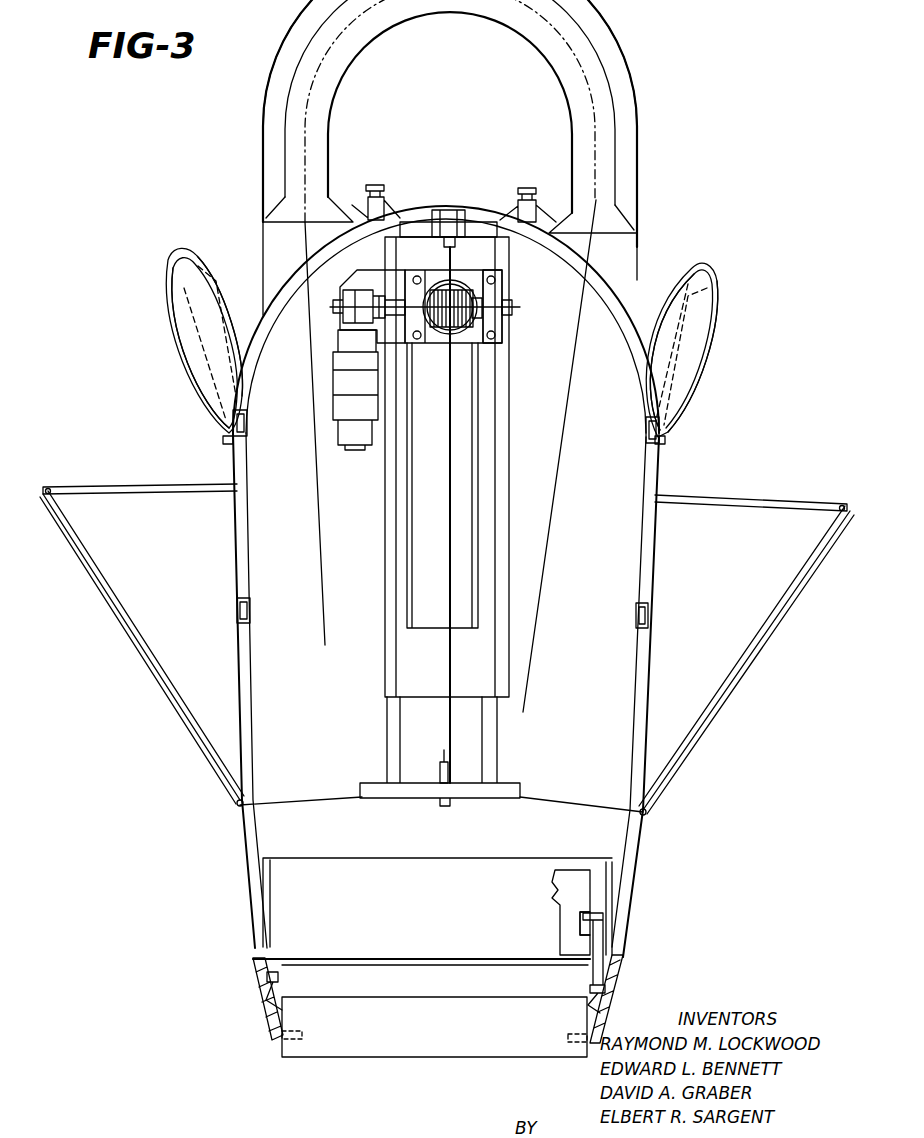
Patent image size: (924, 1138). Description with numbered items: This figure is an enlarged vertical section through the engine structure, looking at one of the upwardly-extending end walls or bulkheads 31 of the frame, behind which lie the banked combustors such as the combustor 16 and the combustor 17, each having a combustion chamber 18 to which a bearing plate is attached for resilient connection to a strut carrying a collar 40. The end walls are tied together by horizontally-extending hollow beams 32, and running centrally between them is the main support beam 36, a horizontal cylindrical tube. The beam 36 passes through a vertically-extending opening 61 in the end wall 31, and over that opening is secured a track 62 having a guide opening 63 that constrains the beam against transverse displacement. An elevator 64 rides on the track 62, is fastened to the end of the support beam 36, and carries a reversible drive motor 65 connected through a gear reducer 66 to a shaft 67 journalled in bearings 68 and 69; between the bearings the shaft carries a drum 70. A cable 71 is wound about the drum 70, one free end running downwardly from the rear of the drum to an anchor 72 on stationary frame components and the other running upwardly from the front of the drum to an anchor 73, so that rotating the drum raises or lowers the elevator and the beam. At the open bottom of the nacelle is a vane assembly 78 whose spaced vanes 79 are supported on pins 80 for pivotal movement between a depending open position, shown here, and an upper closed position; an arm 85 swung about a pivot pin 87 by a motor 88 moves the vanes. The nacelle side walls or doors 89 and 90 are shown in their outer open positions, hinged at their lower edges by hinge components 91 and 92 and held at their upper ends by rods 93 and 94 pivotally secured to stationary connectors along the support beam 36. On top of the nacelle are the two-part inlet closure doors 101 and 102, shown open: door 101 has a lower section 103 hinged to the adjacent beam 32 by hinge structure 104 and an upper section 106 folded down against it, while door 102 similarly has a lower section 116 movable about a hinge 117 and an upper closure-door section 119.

The combustor 16 is at (640, 130).
The combustor 17 is at (262, 107).
The combustion chamber 18 is at (262, 237).
The end wall 31 is at (587, 692).
The beam 32 is at (248, 428).
The main support beam 36 is at (454, 340).
The collar 40 is at (374, 190).
The opening 61 is at (482, 752).
The track 62 is at (386, 676).
The guide opening 63 is at (410, 594).
The elevator 64 is at (492, 346).
The drive motor 65 is at (355, 442).
The gear reducer 66 is at (340, 308).
The shaft 67 is at (504, 308).
The bearing 68 is at (500, 326).
The bearing 69 is at (398, 288).
The drum 70 is at (440, 332).
The cable 71 is at (450, 515).
The anchor 72 is at (440, 770).
The anchor 73 is at (452, 212).
The vane assembly 78 is at (616, 1004).
The vanes 79 is at (350, 1060).
The pins 80 is at (278, 1048).
The arm 85 is at (604, 952).
The pivot pin 87 is at (586, 930).
The motor 88 is at (554, 884).
The door 89 is at (172, 718).
The door 90 is at (722, 696).
The hinge component 91 is at (238, 806).
The hinge component 92 is at (644, 813).
The rod 93 is at (145, 494).
The rod 94 is at (737, 506).
The closure door 101 is at (158, 312).
The closure door 102 is at (730, 304).
The lower section 103 is at (712, 362).
The hinge structure 104 is at (229, 440).
The upper section 106 is at (663, 322).
The lower section 116 is at (192, 372).
The hinge 117 is at (660, 442).
The upper closure-door section 119 is at (243, 310).